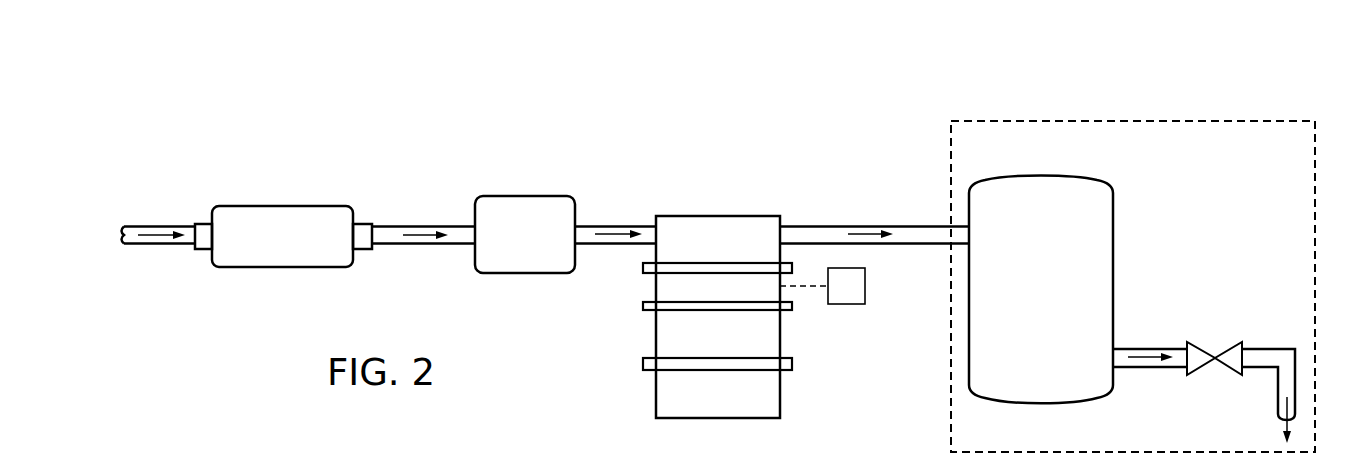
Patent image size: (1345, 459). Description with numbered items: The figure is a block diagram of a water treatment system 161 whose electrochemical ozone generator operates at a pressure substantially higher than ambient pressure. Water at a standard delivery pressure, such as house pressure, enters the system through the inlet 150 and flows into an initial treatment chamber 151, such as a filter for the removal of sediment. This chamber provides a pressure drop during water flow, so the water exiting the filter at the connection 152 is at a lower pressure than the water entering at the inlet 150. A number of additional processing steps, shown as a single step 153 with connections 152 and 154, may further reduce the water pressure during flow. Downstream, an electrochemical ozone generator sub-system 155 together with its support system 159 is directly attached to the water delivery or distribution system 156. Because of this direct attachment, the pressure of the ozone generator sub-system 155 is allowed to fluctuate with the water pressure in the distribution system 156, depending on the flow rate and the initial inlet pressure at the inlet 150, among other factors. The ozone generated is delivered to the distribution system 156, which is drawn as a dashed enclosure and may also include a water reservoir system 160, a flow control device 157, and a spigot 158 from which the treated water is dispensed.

The inlet 150 is at (128, 227).
The initial treatment chamber 151 is at (250, 205).
The filter outlet connection 152 is at (418, 225).
The additional processing step 153 is at (507, 196).
The processing step outlet connection 154 is at (618, 226).
The electrochemical ozone generator sub-system 155 is at (657, 402).
The water delivery or distribution system 156 is at (1138, 121).
The flow control device 157 is at (1212, 348).
The spigot 158 is at (1278, 405).
The support system 159 is at (855, 304).
The water reservoir system 160 is at (1065, 177).
The water treatment system 161 is at (166, 118).